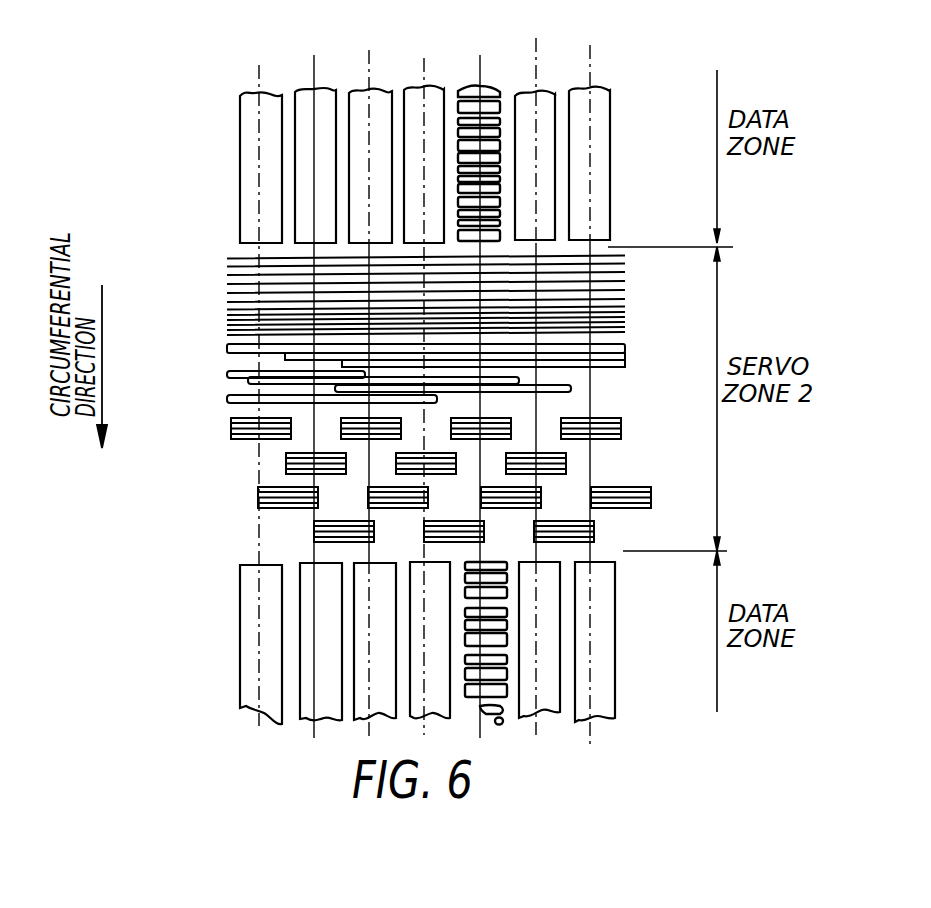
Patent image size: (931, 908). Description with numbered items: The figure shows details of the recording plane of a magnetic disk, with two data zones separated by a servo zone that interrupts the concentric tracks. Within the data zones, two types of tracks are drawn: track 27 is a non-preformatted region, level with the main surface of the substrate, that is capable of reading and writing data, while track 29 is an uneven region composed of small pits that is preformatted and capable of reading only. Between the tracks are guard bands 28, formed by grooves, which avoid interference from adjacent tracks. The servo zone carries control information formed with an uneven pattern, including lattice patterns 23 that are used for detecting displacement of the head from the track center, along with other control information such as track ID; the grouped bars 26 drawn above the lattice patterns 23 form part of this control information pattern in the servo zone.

The lattice patterns 23 is at (195, 420).
The servo synchronization and address mark bars 26 is at (195, 338).
The track 27 is at (242, 124).
The guard bands 28 is at (397, 90).
The track 29 is at (473, 88).